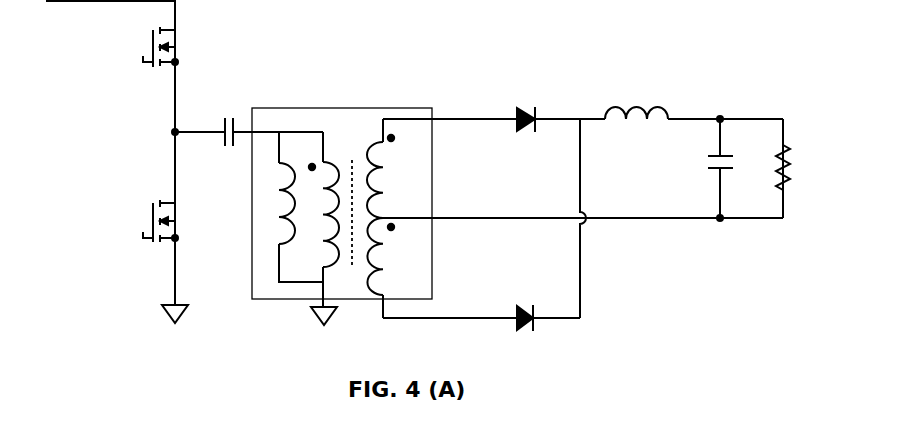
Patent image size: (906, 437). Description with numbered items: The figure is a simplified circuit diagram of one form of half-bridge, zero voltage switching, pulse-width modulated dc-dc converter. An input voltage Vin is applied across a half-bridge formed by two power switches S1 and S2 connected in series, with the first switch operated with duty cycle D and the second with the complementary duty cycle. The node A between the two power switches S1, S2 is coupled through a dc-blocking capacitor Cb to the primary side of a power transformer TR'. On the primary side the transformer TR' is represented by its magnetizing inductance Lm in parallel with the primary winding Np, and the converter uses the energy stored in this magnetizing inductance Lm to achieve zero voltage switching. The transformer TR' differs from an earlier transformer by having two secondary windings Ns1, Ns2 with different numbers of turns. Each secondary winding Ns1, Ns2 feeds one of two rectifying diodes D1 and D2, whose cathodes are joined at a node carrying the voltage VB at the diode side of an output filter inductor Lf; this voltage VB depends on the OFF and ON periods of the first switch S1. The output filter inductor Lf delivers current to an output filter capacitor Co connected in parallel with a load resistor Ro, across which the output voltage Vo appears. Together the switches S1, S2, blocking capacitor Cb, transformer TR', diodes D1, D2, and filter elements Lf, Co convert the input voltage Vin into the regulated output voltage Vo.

The input voltage source Vin is at (70, 18).
The power switch S1 is at (145, 50).
The power switch S2 is at (137, 224).
The node A is at (188, 133).
The dc-blocking capacitor Cb is at (271, 144).
The power transformer TR' is at (342, 201).
The magnetizing inductance Lm is at (290, 207).
The primary winding Np is at (323, 219).
The secondary winding Ns1 is at (392, 168).
The secondary winding Ns2 is at (391, 268).
The rectifying diode D1 is at (530, 105).
The rectifying diode D2 is at (530, 307).
The voltage at the diode side of the filter inductor VB is at (579, 202).
The output filter inductor Lf is at (636, 100).
The output filter capacitor Co is at (710, 168).
The load resistor Ro is at (771, 168).
The output voltage Vo is at (810, 172).